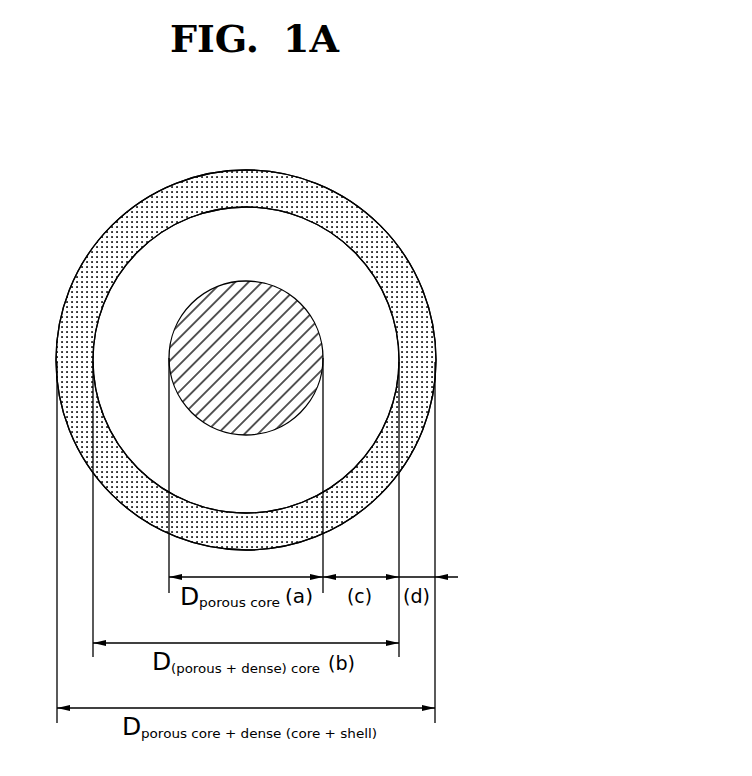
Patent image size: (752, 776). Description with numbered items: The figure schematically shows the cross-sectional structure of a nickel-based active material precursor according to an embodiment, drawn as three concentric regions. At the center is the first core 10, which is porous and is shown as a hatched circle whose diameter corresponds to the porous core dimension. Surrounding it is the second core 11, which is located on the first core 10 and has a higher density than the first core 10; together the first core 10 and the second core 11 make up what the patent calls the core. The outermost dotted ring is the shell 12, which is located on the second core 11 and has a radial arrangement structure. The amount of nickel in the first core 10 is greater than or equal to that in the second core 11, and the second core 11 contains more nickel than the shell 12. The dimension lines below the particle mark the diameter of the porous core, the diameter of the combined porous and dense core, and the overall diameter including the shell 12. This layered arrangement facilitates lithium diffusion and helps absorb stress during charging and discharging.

The first core 10 is at (302, 330).
The second core 11 is at (300, 232).
The shell 12 is at (247, 181).